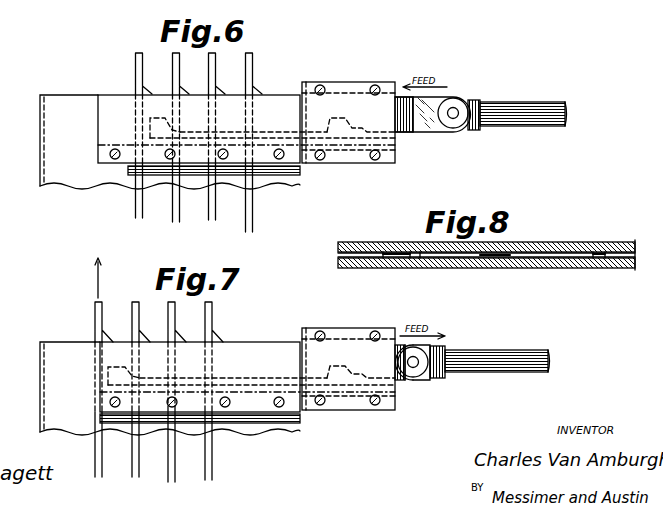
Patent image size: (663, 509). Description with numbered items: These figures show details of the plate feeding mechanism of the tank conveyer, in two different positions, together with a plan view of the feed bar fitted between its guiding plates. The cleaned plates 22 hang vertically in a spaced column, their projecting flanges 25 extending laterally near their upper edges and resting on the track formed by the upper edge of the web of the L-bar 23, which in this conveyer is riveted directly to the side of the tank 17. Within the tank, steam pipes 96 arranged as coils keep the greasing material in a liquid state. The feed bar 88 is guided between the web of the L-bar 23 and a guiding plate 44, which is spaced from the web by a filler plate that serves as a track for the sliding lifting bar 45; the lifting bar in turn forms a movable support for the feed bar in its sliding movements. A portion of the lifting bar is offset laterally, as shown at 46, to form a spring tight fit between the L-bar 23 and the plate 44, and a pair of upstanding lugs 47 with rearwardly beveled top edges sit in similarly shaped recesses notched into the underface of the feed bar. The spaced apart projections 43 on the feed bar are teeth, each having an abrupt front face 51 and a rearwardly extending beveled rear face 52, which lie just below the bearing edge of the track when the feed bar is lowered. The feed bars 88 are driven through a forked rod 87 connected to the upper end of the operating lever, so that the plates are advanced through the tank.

In FIG. 6, the tank 17 is at (50, 134).
In FIG. 6, the plates 22 is at (139, 218).
In FIG. 7, the plates 22 is at (159, 404).
In FIG. 6, the projecting flanges 25 is at (198, 147).
In FIG. 7, the projecting flanges 25 is at (158, 392).
In FIG. 7, the spaced apart projections 43 is at (173, 336).
In FIG. 7, the abrupt front face 51 is at (95, 342).
In FIG. 7, the beveled rear face 52 is at (218, 341).
In FIG. 6, the forked rod 87 is at (539, 127).
In FIG. 7, the forked rod 87 is at (487, 358).
In FIG. 6, the feed bars 88 is at (437, 103).
In FIG. 7, the feed bars 88 is at (405, 380).
In FIG. 6, the steam pipes 96 is at (116, 12).
In FIG. 8, the L-bar 23 is at (393, 248).
In FIG. 8, the guiding plate 44 is at (437, 262).
In FIG. 8, the sliding lifting bar 45 is at (562, 256).
In FIG. 8, the laterally offset portion 46 is at (500, 259).
In FIG. 8, the upstanding lugs 47 is at (407, 262).